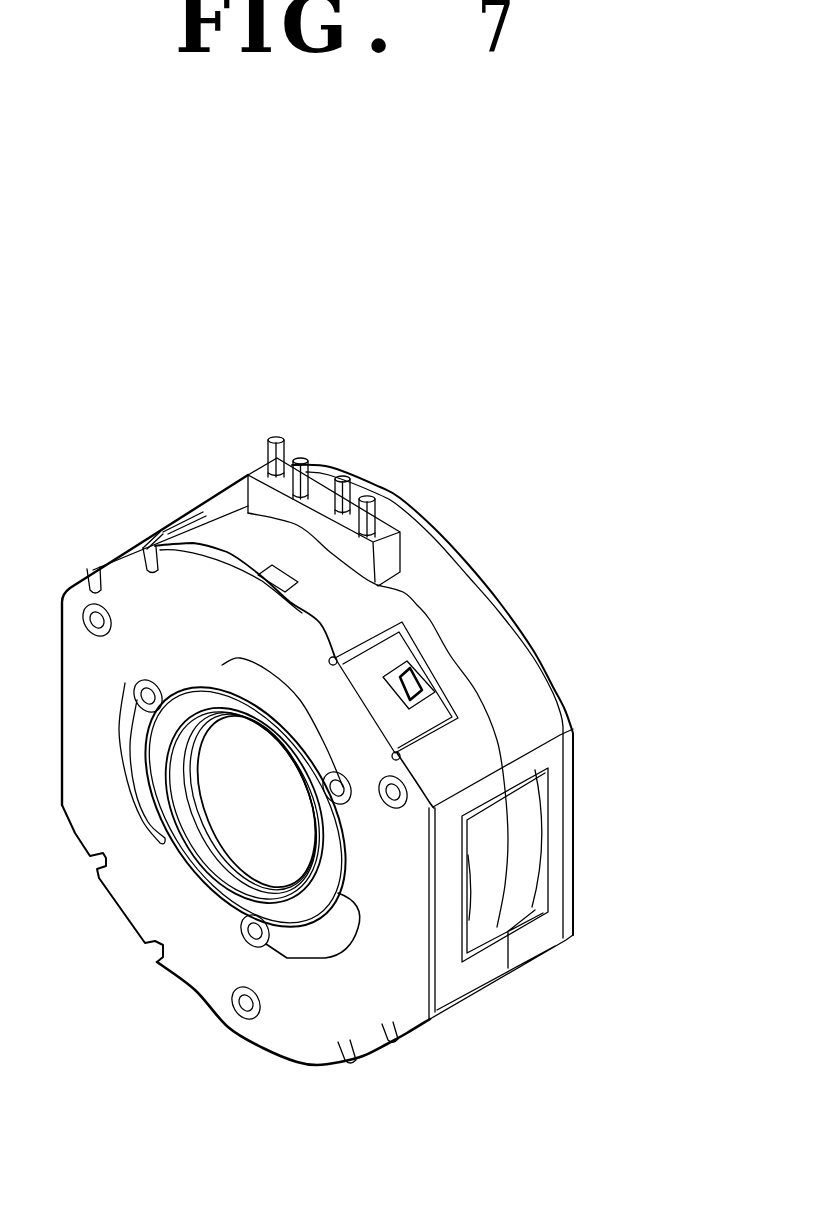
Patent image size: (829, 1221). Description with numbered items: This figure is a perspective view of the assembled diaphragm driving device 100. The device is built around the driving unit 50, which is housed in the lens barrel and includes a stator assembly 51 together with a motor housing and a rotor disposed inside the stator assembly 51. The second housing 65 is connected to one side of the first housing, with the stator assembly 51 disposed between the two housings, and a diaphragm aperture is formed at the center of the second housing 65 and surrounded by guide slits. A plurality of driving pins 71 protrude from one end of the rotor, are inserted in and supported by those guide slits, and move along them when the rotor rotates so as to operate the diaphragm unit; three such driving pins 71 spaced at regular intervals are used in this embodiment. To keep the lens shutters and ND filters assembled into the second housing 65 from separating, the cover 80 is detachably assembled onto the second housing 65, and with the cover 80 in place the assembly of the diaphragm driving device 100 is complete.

The diaphragm driving device 100 is at (470, 406).
The driving unit 50 is at (570, 606).
The stator assembly 51 is at (558, 852).
The second housing 65 is at (453, 980).
The driving pin 71 is at (292, 958).
The cover 80 is at (146, 900).